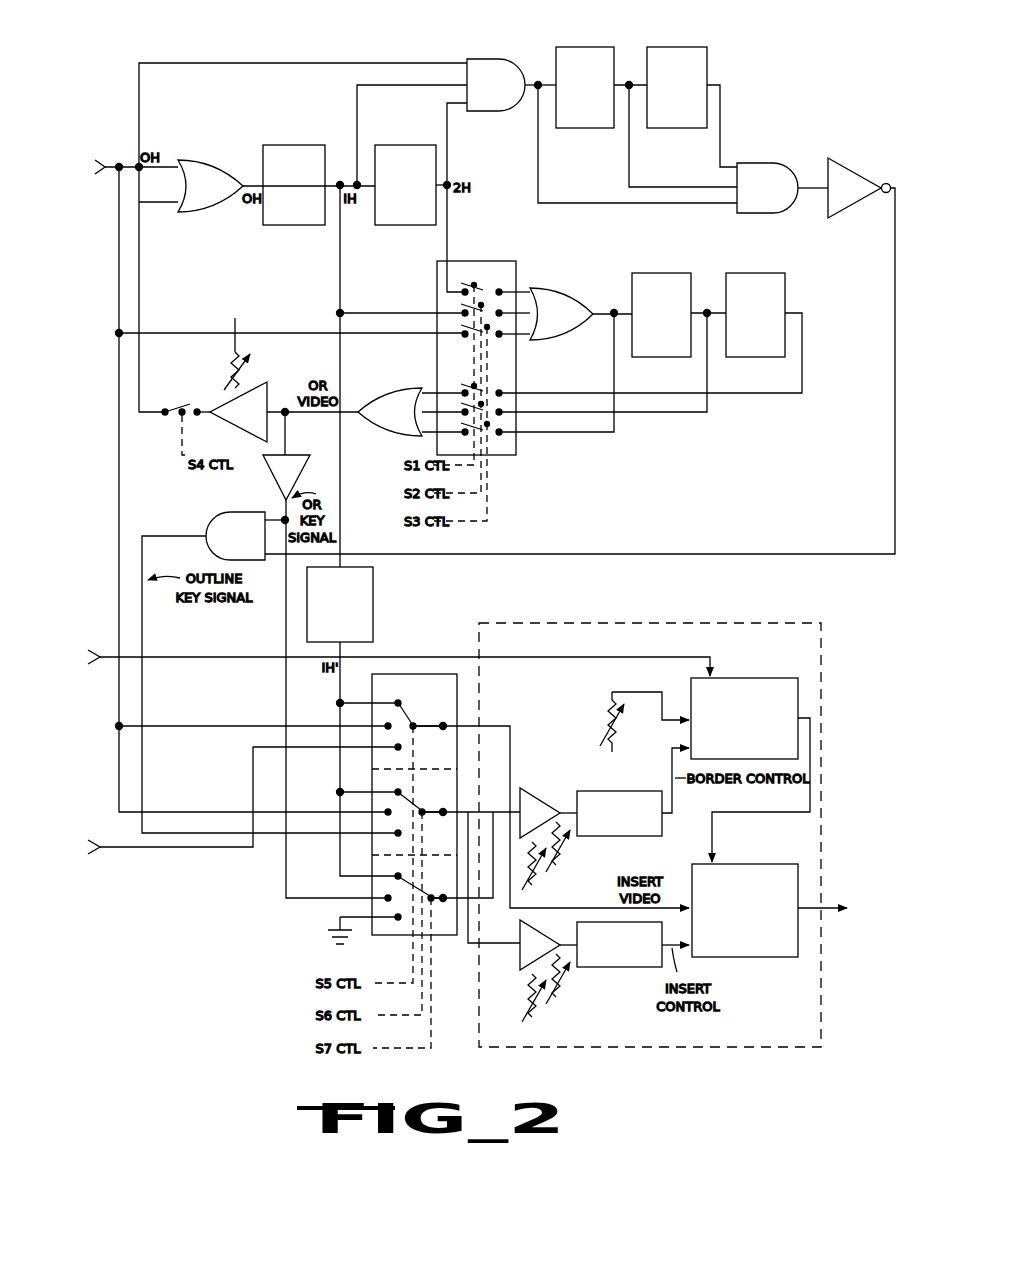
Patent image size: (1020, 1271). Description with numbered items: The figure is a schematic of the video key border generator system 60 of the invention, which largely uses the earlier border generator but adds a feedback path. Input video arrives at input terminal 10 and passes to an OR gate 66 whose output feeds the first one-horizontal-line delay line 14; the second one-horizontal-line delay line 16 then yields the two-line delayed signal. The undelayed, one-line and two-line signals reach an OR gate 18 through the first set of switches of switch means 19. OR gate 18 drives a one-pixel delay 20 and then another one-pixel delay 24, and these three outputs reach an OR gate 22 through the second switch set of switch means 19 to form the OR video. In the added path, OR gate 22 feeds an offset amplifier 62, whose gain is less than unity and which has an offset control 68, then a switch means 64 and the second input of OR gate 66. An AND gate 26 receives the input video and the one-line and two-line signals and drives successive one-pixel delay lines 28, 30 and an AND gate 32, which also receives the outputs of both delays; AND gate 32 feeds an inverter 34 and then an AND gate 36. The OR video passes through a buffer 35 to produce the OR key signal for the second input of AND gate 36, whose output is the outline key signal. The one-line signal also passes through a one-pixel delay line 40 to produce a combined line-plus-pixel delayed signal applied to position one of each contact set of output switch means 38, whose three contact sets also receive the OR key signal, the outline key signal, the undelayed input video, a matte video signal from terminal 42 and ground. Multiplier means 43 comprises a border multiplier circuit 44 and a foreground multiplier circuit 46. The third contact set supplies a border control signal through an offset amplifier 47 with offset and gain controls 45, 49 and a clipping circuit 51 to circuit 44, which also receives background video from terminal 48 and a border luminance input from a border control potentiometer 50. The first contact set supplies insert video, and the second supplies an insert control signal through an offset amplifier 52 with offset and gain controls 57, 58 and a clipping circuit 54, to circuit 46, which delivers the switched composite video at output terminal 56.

The input terminal 10 is at (100, 135).
The first 1H delay line 14 is at (296, 147).
The second 1H delay line 16 is at (403, 147).
The OR gate 18 is at (560, 290).
The switch means 19 is at (483, 259).
The 1p delay 20 is at (659, 274).
The OR gate 22 is at (393, 390).
The 1p delay 24 is at (748, 274).
The AND gate 26 is at (484, 64).
The 1p delay line 28 is at (583, 48).
The 1p delay line 30 is at (674, 48).
The AND gate 32 is at (750, 166).
The inverter 34 is at (848, 172).
The buffer 35 is at (272, 470).
The AND gate 36 is at (232, 516).
The output switch means 38 is at (414, 672).
The 1p delay line 40 is at (376, 592).
The terminal 42 is at (45, 847).
The multiplier means 43 is at (654, 621).
The border multiplier circuit 44 is at (756, 684).
The offset control 45 is at (542, 880).
The foreground multiplier circuit 46 is at (758, 869).
The offset amplifier 47 is at (553, 808).
The terminal 48 is at (46, 659).
The gain control 49 is at (560, 868).
The border control potentiometer 50 is at (616, 740).
The clipping circuit 51 is at (598, 792).
The offset amplifier 52 is at (553, 942).
The clipping circuit 54 is at (627, 968).
The output terminal 56 is at (812, 902).
The offset control 57 is at (528, 1010).
The gain control 58 is at (560, 1002).
The video key border generator system 60 is at (582, 490).
The offset amplifier 62 is at (222, 402).
The switch means 64 is at (176, 396).
The OR gate 66 is at (204, 167).
The offset control 68 is at (250, 357).